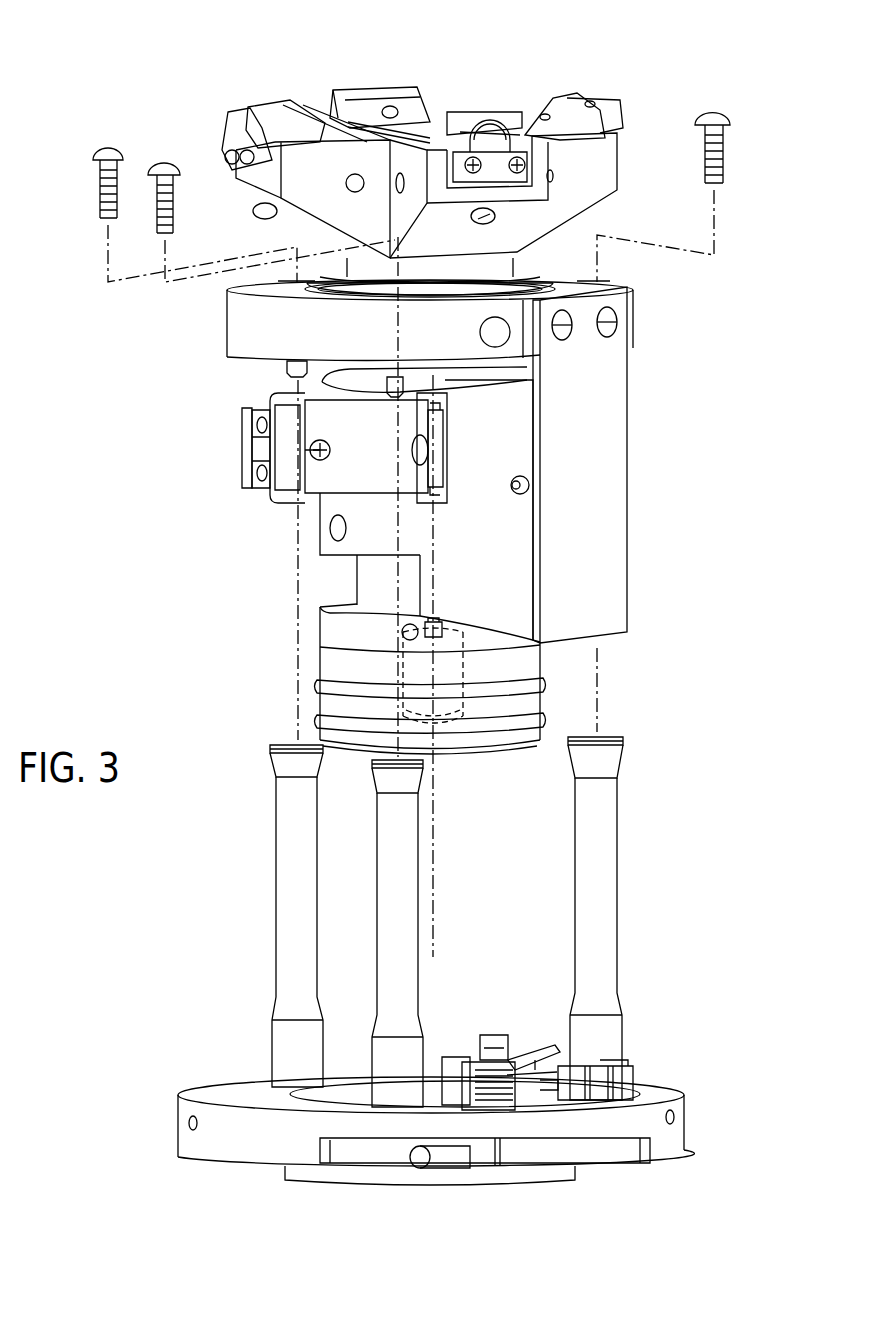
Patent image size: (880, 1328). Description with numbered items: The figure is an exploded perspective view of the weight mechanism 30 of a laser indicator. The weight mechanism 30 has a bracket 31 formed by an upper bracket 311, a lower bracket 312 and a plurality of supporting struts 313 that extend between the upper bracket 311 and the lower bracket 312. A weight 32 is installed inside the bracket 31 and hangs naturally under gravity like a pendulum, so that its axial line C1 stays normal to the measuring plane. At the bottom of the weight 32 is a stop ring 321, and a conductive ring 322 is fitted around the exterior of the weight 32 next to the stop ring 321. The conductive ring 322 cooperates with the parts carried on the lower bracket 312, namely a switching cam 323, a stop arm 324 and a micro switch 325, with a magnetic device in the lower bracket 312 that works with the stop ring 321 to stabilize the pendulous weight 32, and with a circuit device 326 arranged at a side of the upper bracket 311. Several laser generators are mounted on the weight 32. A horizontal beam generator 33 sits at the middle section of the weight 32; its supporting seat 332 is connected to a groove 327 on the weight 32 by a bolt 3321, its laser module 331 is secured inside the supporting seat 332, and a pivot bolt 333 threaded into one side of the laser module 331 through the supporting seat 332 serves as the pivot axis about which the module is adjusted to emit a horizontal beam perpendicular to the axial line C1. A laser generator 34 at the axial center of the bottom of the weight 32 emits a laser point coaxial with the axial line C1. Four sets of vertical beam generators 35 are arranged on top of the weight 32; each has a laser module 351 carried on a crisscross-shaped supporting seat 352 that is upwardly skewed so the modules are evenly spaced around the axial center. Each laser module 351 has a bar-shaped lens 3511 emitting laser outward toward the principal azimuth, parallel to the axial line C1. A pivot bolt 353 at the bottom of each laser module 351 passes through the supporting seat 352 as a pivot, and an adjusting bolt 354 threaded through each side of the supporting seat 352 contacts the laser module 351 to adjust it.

The weight mechanism 30 is at (122, 63).
The bracket 31 is at (222, 1052).
The upper bracket 311 is at (228, 326).
The lower bracket 312 is at (680, 1117).
The supporting struts 313 is at (612, 820).
The weight 32 is at (515, 510).
The stop ring 321 is at (513, 740).
The conductive ring 322 is at (350, 732).
The switching cam 323 is at (465, 1060).
The stop arm 324 is at (527, 1048).
The micro switch 325 is at (633, 1068).
The circuit device 326 is at (617, 436).
The groove 327 is at (441, 498).
The horizontal beam generator 33 is at (148, 377).
The laser module 331 is at (243, 422).
The supporting seat 332 is at (293, 397).
The pivot bolt 333 is at (412, 450).
The bolt 3321 is at (412, 452).
The laser generator 34 is at (455, 727).
The vertical beam generators 35 is at (550, 76).
The laser module 351 is at (498, 113).
The bar-shaped lens 3511 is at (485, 142).
The supporting seat 352 is at (543, 195).
The pivot bolt 353 is at (492, 220).
The adjusting bolt 354 is at (396, 184).
The axial line C1 is at (435, 868).